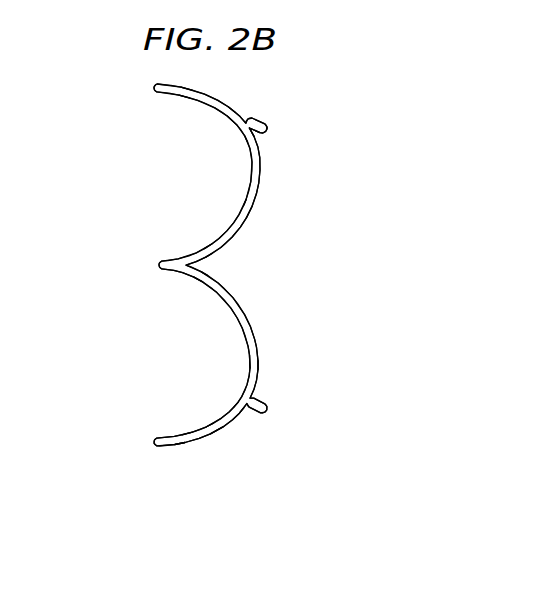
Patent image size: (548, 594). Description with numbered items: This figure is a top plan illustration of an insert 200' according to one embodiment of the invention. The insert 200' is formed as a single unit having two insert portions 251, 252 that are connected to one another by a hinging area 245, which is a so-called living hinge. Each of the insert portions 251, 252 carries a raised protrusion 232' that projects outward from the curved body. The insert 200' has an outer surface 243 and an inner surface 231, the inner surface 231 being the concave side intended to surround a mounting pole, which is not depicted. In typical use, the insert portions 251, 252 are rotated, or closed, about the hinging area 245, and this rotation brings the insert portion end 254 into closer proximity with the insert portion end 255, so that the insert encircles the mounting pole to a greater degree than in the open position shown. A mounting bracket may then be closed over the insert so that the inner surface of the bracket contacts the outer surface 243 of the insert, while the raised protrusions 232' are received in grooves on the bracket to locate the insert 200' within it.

The insert 200' is at (282, 253).
The inner surface 231 is at (224, 117).
The raised protrusions 232' is at (277, 250).
The outer surface 243 is at (255, 214).
The hinging area 245 is at (160, 263).
The insert portion 251 is at (258, 188).
The insert portion 252 is at (251, 331).
The insert portion end 254 is at (152, 89).
The insert portion end 255 is at (153, 442).